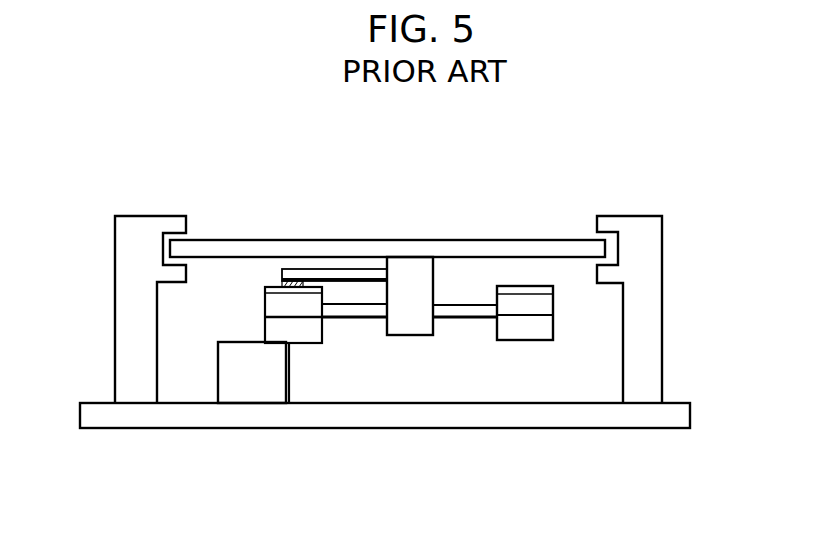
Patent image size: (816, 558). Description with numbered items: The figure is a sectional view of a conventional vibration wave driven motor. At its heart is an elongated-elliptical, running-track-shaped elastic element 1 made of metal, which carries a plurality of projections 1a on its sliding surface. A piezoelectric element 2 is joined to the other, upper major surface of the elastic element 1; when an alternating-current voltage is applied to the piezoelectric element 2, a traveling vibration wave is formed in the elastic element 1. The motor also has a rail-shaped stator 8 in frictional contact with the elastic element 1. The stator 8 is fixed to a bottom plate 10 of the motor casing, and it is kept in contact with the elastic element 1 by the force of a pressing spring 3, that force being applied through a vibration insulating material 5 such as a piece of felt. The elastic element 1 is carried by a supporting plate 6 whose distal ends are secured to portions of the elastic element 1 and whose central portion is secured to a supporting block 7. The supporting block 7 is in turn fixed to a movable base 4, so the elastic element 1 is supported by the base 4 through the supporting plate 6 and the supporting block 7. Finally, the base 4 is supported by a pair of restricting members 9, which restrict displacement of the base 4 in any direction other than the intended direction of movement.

The elastic element 1 is at (533, 337).
The projections 1a is at (534, 333).
The piezoelectric element 2 is at (518, 285).
The pressing spring 3 is at (341, 268).
The movable base 4 is at (431, 248).
The vibration insulating material 5 is at (278, 281).
The supporting plate 6 is at (458, 312).
The supporting block 7 is at (410, 325).
The stator 8 is at (253, 390).
The restricting members 9 is at (652, 285).
The bottom plate 10 is at (628, 418).